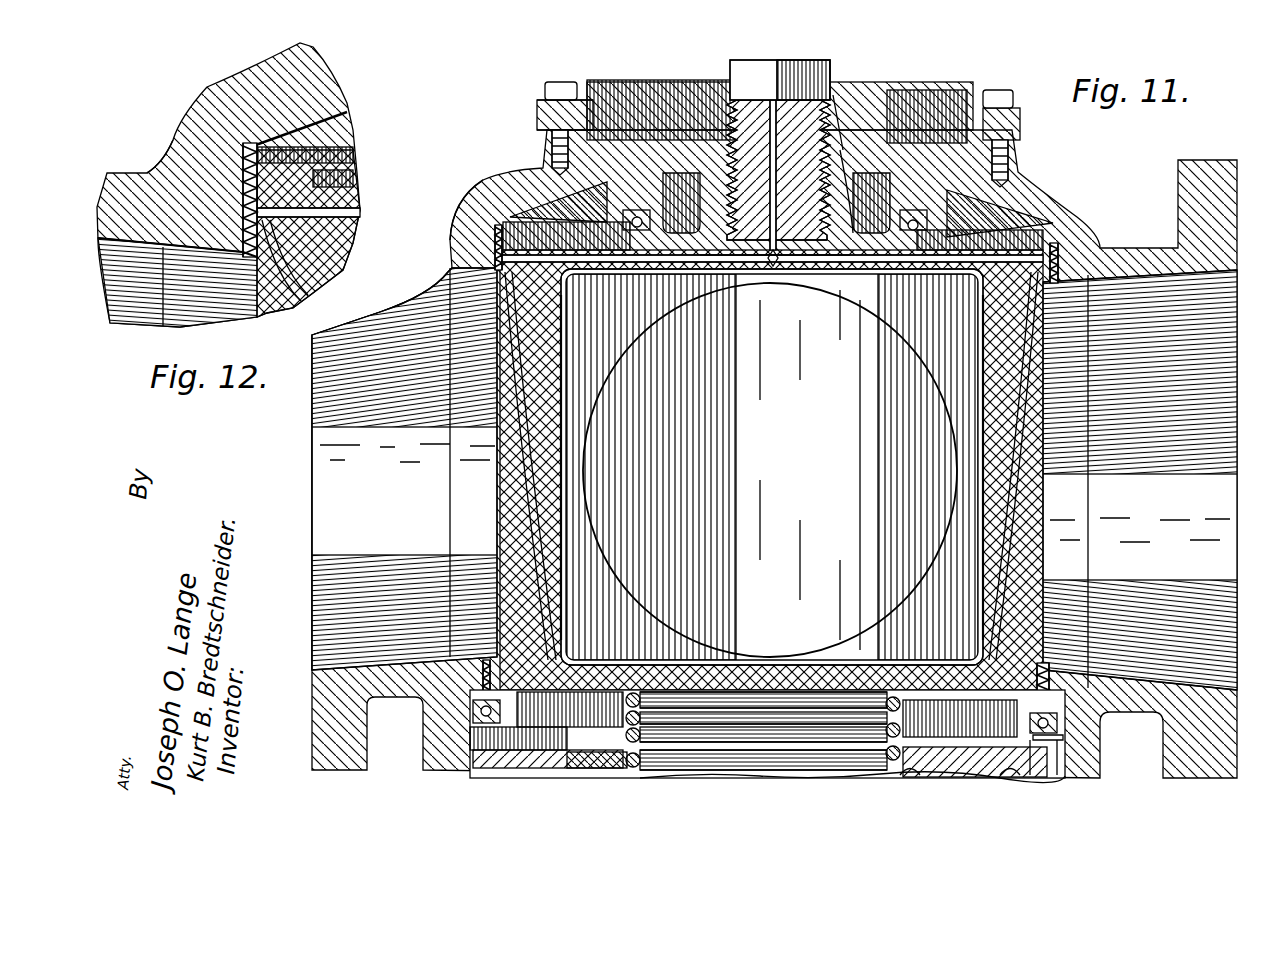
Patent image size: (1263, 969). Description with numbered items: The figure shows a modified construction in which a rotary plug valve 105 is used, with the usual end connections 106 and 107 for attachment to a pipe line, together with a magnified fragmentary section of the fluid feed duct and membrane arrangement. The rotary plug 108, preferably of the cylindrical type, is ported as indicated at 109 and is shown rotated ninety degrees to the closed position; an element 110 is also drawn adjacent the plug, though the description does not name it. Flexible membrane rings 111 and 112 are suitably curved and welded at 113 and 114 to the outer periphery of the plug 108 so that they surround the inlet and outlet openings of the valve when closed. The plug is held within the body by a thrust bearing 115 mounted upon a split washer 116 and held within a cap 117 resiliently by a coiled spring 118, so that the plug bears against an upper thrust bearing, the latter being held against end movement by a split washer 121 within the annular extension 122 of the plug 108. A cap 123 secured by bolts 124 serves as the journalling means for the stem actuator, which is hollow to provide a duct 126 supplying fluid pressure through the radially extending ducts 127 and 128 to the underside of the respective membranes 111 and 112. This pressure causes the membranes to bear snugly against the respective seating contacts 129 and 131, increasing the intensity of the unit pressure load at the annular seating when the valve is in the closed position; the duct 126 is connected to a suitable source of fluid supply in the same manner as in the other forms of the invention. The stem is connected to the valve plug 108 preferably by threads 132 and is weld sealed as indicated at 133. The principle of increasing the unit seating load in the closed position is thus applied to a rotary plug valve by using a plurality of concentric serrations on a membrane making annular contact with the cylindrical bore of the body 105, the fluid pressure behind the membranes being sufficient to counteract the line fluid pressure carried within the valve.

In FIG. 11, the rotary plug valve 105 is at (445, 250).
In FIG. 12, the rotary plug valve 105 is at (100, 169).
In FIG. 11, the end connection 106 is at (318, 432).
In FIG. 12, the end connection 106 is at (133, 307).
In FIG. 11, the end connection 107 is at (1180, 509).
In FIG. 11, the rotary plug 108 is at (1042, 238).
In FIG. 12, the rotary plug 108 is at (315, 158).
In FIG. 11, the port 109 is at (945, 430).
In FIG. 11, the wedge cam 110 is at (990, 235).
In FIG. 11, the flexible membrane ring 111 is at (1058, 262).
In FIG. 11, the flexible membrane ring 112 is at (449, 245).
In FIG. 12, the flexible membrane ring 112 is at (190, 172).
In FIG. 11, the weld 113 is at (497, 225).
In FIG. 12, the weld 113 is at (240, 168).
In FIG. 11, the weld 114 is at (495, 268).
In FIG. 12, the weld 114 is at (247, 260).
In FIG. 11, the thrust bearing 115 is at (1060, 724).
In FIG. 11, the split washer 116 is at (1060, 748).
In FIG. 11, the cap 117 is at (1016, 775).
In FIG. 11, the coiled spring 118 is at (916, 775).
In FIG. 11, the split washer 121 is at (913, 200).
In FIG. 11, the annular extension 122 is at (880, 180).
In FIG. 11, the cap 123 is at (537, 114).
In FIG. 11, the bolts 124 is at (545, 90).
In FIG. 11, the duct 126 is at (770, 75).
In FIG. 11, the radially extending duct 127 is at (829, 262).
In FIG. 11, the radially extending duct 128 is at (685, 262).
In FIG. 12, the radially extending duct 128 is at (322, 225).
In FIG. 11, the seating contact 129 is at (1005, 282).
In FIG. 11, the seating contact 131 is at (640, 272).
In FIG. 11, the threads 132 is at (845, 165).
In FIG. 11, the weld seal 133 is at (735, 100).